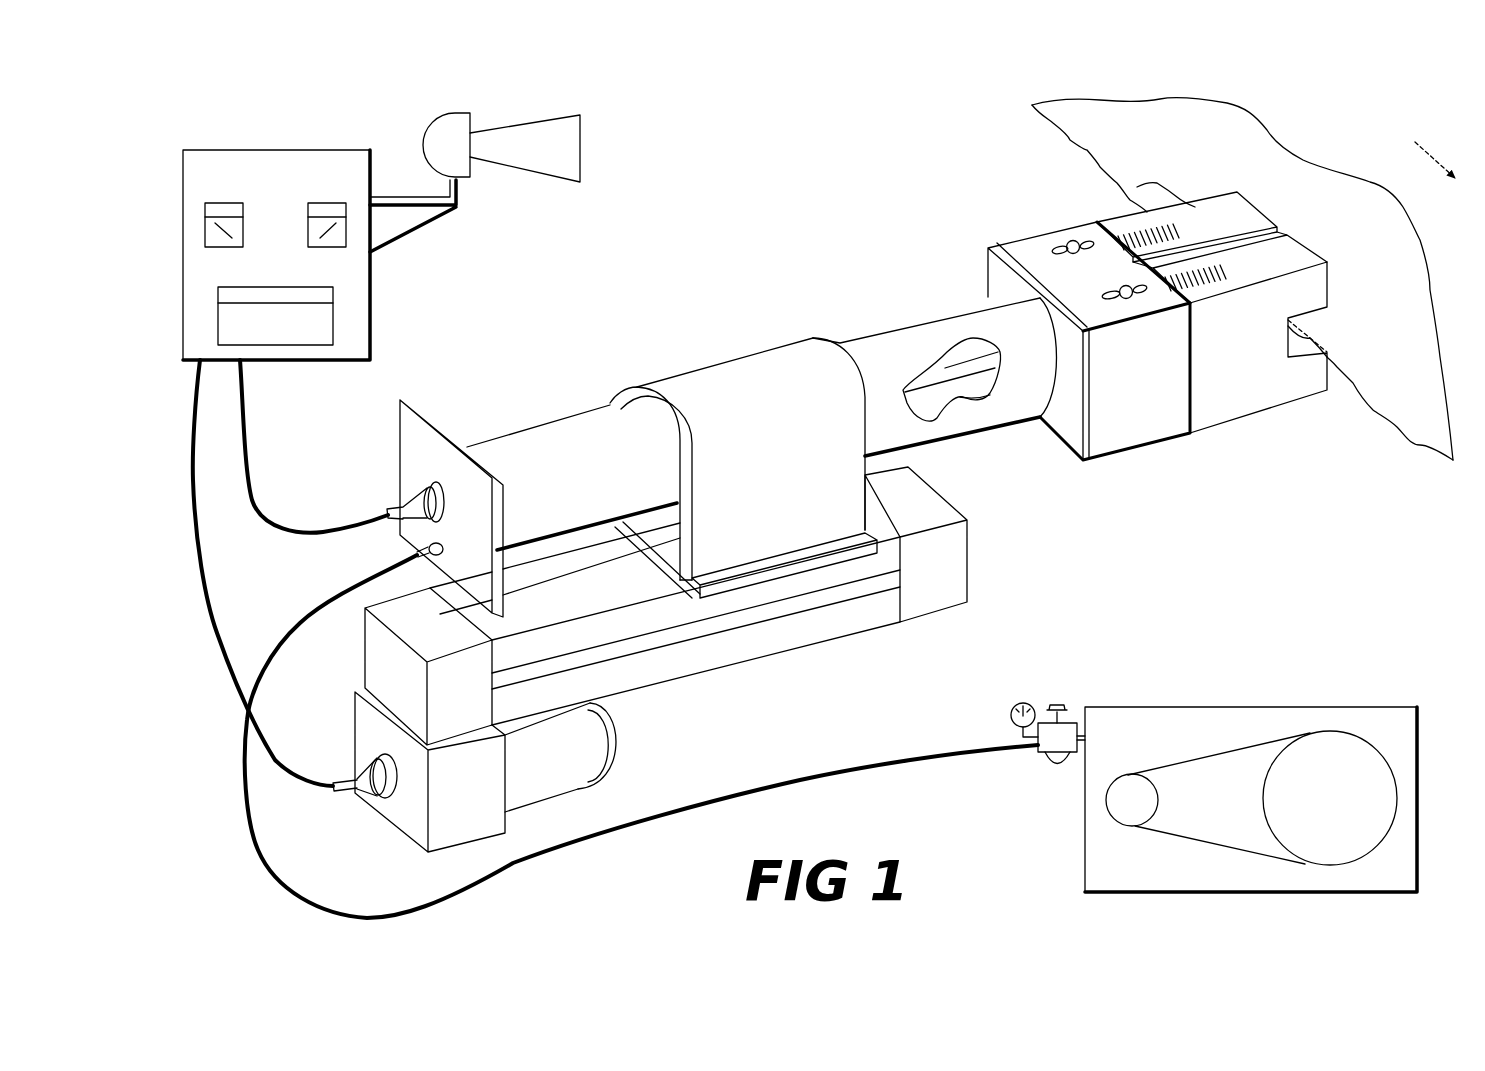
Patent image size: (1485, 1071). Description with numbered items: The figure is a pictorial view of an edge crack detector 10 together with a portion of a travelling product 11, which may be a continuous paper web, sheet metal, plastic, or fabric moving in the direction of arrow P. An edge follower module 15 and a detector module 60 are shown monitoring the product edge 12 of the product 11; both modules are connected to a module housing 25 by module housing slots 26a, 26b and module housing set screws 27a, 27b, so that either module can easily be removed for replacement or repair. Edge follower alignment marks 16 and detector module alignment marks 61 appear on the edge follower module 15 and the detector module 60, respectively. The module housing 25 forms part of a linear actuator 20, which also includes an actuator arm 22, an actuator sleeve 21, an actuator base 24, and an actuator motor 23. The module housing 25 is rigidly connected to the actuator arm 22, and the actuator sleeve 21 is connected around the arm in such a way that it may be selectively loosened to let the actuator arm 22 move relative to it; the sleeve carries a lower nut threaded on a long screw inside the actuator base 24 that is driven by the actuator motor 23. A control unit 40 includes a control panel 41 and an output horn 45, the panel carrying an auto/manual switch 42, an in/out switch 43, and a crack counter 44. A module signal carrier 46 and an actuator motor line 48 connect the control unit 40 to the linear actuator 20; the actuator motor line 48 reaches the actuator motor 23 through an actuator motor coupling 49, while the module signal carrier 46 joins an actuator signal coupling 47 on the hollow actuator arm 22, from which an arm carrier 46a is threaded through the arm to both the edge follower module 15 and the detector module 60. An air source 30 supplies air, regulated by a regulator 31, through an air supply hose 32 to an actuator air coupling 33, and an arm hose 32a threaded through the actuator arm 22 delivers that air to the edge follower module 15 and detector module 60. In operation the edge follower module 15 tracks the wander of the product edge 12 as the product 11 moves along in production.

The edge crack detector 10 is at (870, 132).
The travelling product 11 is at (1127, 160).
The product edge 12 is at (1403, 423).
The edge follower module 15 is at (1193, 207).
The edge follower alignment marks 16 is at (1123, 233).
The linear actuator 20 is at (722, 292).
The actuator sleeve 21 is at (728, 358).
The actuator arm 22 is at (878, 335).
The actuator motor 23 is at (542, 790).
The actuator base 24 is at (677, 667).
The module housing 25 is at (1108, 440).
The module housing slot 26a is at (1112, 297).
The module housing slot 26b is at (1053, 250).
The module housing set screw 27a is at (1135, 293).
The module housing set screw 27b is at (1070, 249).
The air source 30 is at (1128, 705).
The regulator 31 is at (1057, 712).
The air supply hose 32 is at (863, 763).
The arm hose 32a is at (993, 405).
The actuator air coupling 33 is at (435, 558).
The control unit 40 is at (318, 130).
The control panel 41 is at (245, 150).
The auto/manual switch 42 is at (212, 243).
The in/out switch 43 is at (340, 250).
The crack counter 44 is at (312, 338).
The output horn 45 is at (490, 202).
The module signal carrier 46 is at (247, 408).
The arm carrier 46a is at (973, 357).
The actuator signal coupling 47 is at (423, 502).
The actuator motor line 48 is at (190, 447).
The actuator motor coupling 49 is at (370, 787).
The detector module 60 is at (1250, 403).
The detector module alignment marks 61 is at (1197, 285).